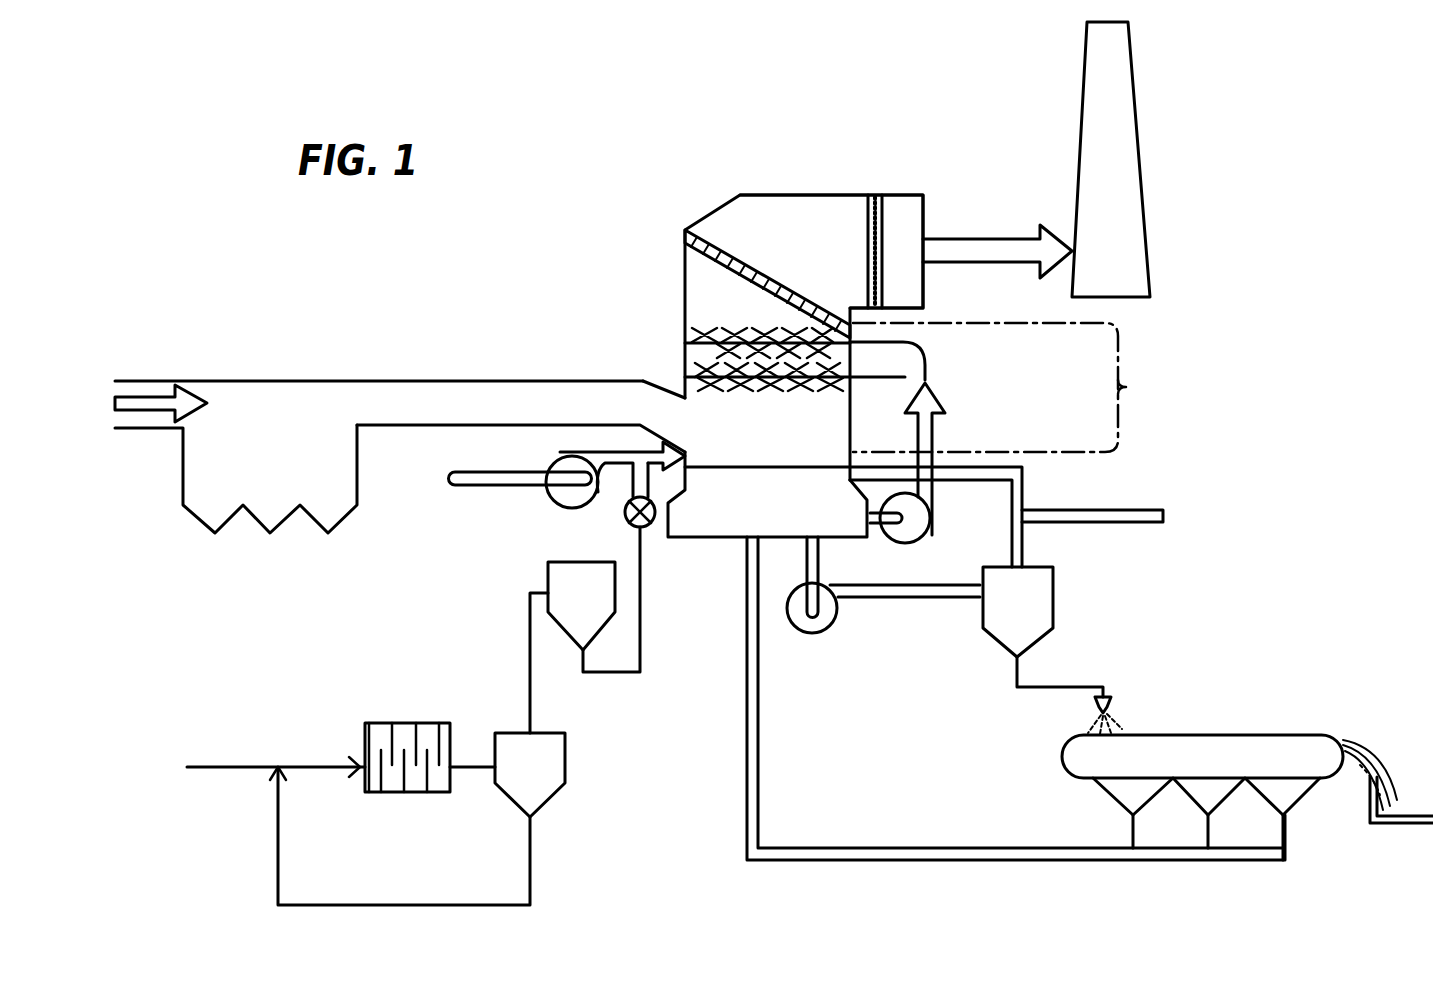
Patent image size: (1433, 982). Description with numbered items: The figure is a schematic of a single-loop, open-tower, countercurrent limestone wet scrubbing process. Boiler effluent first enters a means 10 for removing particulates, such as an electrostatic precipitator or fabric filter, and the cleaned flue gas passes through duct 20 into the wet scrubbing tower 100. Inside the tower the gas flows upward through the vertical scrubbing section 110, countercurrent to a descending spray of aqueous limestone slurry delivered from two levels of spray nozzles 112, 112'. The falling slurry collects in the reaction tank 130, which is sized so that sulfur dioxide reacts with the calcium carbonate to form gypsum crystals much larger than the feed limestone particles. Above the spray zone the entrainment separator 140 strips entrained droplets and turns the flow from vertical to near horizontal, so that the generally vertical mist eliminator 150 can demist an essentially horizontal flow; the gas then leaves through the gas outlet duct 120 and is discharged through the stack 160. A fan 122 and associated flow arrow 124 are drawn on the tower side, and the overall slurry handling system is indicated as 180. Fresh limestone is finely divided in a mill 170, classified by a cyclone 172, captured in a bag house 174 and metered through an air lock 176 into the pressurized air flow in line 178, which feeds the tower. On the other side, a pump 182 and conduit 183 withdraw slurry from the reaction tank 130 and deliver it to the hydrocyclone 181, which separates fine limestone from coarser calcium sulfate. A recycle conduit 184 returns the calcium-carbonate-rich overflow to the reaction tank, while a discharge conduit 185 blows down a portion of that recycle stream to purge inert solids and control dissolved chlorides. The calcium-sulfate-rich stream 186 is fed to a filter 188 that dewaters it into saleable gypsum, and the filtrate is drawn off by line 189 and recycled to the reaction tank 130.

The means for removing particulates 10 is at (287, 444).
The duct 20 is at (490, 417).
The wet scrubbing tower 100 is at (715, 188).
The vertical scrubbing section 110 is at (1126, 387).
The spray nozzle level 112 is at (769, 402).
The spray nozzle level 112' is at (760, 321).
The gas outlet duct 120 is at (905, 230).
The recirculation fan 122 is at (928, 531).
The recirculation gas flow arrow 124 is at (933, 428).
The reaction tank 130 is at (790, 514).
The entrainment separator 140 is at (768, 265).
The mist eliminator 150 is at (868, 228).
The stack 160 is at (1142, 166).
The mill 170 is at (403, 723).
The cyclone 172 is at (553, 766).
The bag house 174 is at (548, 573).
The air lock 176 is at (624, 520).
The line 178 is at (560, 452).
The regeneration system 180 is at (1098, 567).
The hydrocyclone 181 is at (1040, 603).
The pump 182 is at (820, 633).
The conduit 183 is at (912, 600).
The recycle conduit 184 is at (1023, 476).
The discharge conduit 185 is at (1115, 510).
The stream 186 is at (1068, 687).
The filter 188 is at (1190, 735).
The line 189 is at (797, 848).